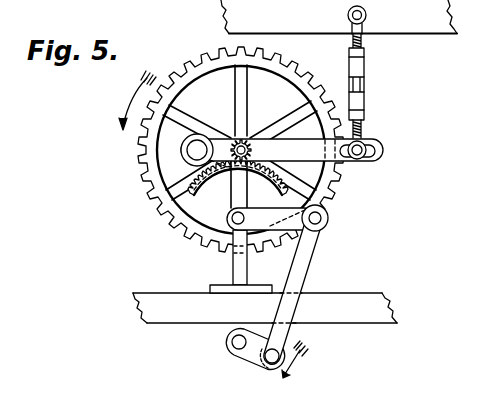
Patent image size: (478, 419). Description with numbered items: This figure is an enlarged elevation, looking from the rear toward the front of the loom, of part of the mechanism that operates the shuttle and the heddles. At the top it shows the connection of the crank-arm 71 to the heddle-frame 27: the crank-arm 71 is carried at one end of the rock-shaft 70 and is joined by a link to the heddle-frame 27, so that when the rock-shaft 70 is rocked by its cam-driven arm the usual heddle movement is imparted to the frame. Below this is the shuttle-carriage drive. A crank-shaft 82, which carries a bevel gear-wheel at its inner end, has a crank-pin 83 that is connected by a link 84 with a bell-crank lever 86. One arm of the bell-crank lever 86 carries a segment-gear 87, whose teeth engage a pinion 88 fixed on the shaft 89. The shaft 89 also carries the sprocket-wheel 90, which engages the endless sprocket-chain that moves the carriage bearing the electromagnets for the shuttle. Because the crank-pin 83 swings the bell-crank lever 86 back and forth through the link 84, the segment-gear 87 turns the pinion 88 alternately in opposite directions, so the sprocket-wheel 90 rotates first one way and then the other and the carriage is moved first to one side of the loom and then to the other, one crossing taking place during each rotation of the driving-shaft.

The heddle-frame 27 is at (339, 17).
The rock-shaft 70 is at (181, 152).
The crank-arm 71 is at (282, 151).
The crank-shaft 82 is at (239, 349).
The crank-pin 83 is at (272, 363).
The link 84 is at (308, 262).
The bell-crank lever 86 is at (271, 219).
The segment-gear 87 is at (238, 190).
The pinion 88 is at (258, 134).
The shaft 89 is at (236, 141).
The sprocket-wheel 90 is at (235, 150).